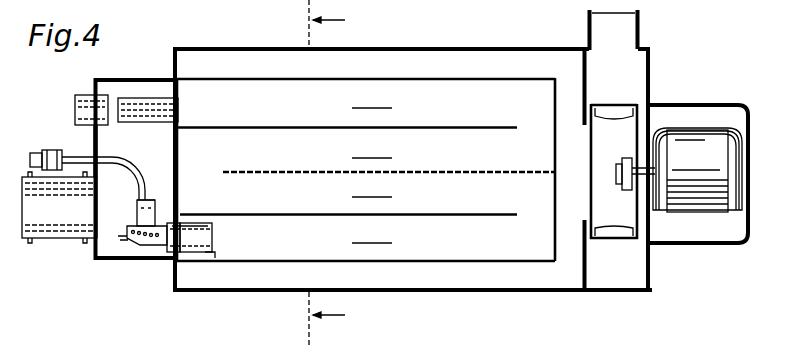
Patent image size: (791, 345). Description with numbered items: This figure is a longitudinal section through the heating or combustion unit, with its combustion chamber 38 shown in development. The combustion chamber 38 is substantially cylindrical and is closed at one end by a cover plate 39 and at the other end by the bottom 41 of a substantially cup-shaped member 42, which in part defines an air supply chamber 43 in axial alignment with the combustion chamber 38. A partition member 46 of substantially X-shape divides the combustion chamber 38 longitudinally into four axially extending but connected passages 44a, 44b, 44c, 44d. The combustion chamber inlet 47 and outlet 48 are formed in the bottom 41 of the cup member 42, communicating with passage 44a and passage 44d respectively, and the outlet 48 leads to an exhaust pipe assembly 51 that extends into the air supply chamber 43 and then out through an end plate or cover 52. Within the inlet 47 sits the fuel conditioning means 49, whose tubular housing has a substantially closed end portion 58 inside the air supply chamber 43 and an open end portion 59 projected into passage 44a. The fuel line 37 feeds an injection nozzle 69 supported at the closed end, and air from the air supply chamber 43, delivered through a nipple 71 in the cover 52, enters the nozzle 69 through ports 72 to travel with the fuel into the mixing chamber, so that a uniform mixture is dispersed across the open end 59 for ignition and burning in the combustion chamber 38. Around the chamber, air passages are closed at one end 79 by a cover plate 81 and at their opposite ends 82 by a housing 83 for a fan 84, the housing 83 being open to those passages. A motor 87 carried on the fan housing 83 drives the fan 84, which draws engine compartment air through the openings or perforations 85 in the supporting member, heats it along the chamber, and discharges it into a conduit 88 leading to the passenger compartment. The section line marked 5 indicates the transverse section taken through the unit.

The section line 5- 5 is at (334, 172).
The fuel line 37 is at (132, 166).
The combustion chamber 38 is at (383, 74).
The cover plate 39 is at (553, 148).
The bottom of cup-shaped member 41 is at (182, 160).
The cup-shaped member 42 is at (135, 78).
The air supply chamber 43 is at (143, 137).
The combustion chamber passage 44a is at (372, 236).
The combustion chamber passage 44b is at (348, 198).
The combustion chamber passage 44c is at (372, 151).
The combustion chamber passage 44d is at (372, 101).
The partition member 46 is at (462, 129).
The combustion chamber inlet 47 is at (182, 224).
The combustion chamber outlet 48 is at (179, 114).
The fuel conditioning means 49 is at (214, 252).
The exhaust pipe assembly 51 is at (179, 81).
The end plate or cover 52 is at (94, 258).
The closed end portion 58 is at (132, 232).
The open end portion 59 is at (214, 232).
The injection nozzle 69 is at (152, 204).
The nipple 71 is at (47, 241).
The ports 72 is at (138, 210).
The end of air passages 79 is at (175, 49).
The cover plate 81 is at (175, 282).
The opposite ends of air passages 82 is at (548, 46).
The fan housing 83 is at (652, 74).
The fan 84 is at (620, 240).
The openings or perforations 85 is at (502, 47).
The motor 87 is at (710, 212).
The conduit 88 is at (628, 19).